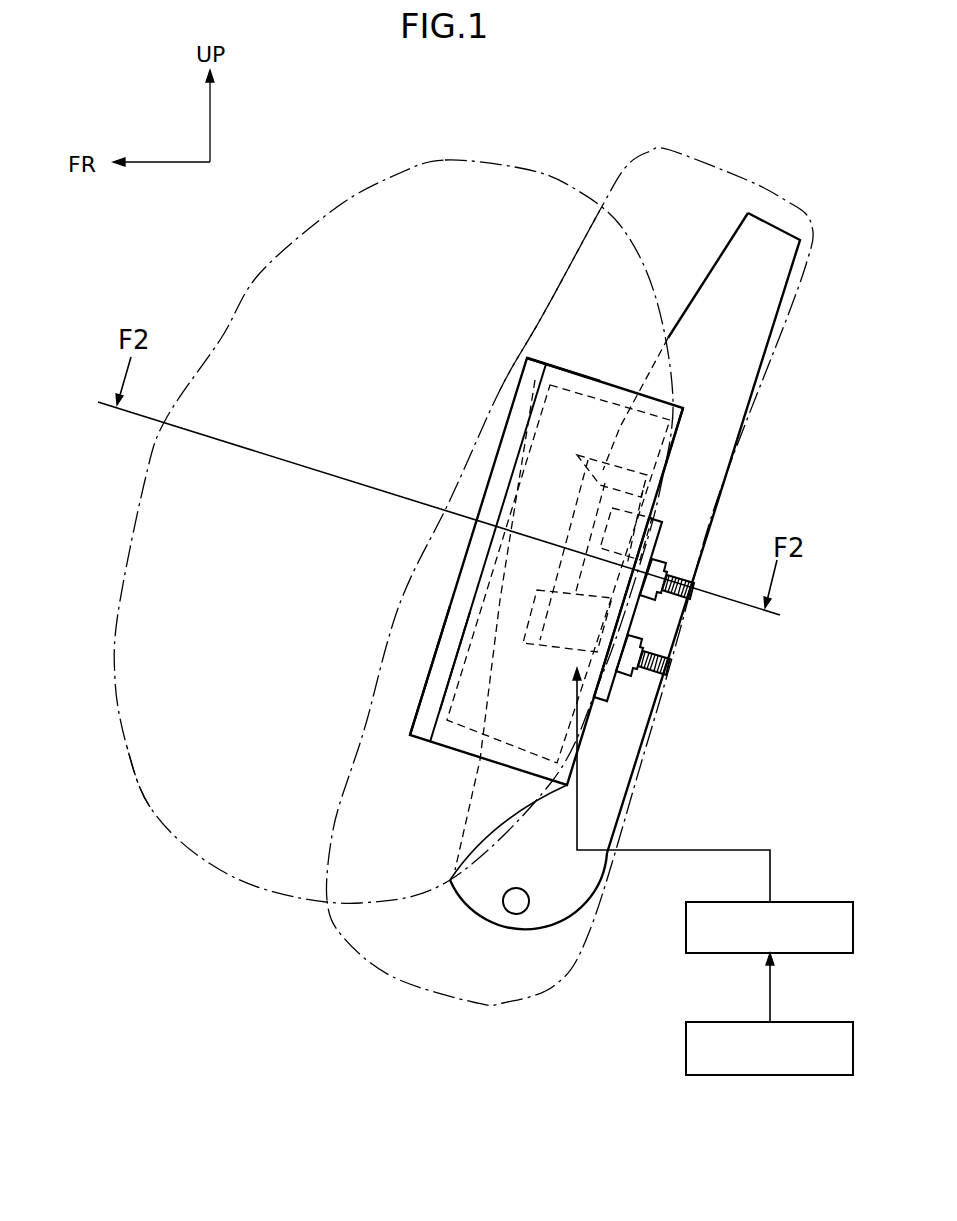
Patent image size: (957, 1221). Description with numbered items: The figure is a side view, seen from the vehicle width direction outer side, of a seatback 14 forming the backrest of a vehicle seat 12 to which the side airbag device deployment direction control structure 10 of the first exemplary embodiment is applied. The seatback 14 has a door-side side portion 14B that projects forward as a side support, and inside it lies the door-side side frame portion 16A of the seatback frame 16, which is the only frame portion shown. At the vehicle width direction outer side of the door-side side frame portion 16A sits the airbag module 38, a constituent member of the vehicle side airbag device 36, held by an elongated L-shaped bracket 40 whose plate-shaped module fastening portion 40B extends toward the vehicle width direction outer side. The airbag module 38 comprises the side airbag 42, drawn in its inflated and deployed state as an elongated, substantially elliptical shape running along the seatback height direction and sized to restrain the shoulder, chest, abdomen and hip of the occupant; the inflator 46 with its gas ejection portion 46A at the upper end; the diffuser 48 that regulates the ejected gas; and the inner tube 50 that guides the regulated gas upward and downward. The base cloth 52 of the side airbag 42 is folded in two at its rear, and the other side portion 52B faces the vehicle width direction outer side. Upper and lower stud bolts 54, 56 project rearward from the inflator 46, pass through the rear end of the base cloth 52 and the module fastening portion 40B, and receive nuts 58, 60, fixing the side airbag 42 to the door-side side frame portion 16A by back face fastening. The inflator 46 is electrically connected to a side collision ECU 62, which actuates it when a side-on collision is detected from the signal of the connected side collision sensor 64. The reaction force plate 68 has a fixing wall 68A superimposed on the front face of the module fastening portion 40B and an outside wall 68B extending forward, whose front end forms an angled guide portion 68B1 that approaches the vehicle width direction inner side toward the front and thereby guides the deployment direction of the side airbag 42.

The side airbag device deployment direction control structure 10 is at (360, 367).
The vehicle seat 12 is at (581, 533).
The seatback 14 is at (748, 183).
The door-side side portion 14B is at (560, 277).
The seatback frame 16 is at (740, 533).
The door-side side frame portion 16A is at (763, 350).
The vehicle side airbag device 36 is at (500, 350).
The airbag module 38 is at (455, 742).
The bracket 40 is at (625, 814).
The module fastening portion 40B is at (618, 700).
The side airbag 42 is at (258, 278).
The inflator 46 is at (590, 597).
The gas ejection portion 46A is at (665, 527).
The diffuser 48 is at (583, 523).
The inner tube 50 is at (567, 488).
The base cloth 52 is at (218, 853).
The another side portion 52B is at (150, 802).
The upper stud bolt 54 is at (693, 590).
The lower stud bolt 56 is at (677, 663).
The nut 58 is at (660, 590).
The nut 60 is at (645, 672).
The side collision ECU 62 is at (837, 900).
The side collision sensor 64 is at (837, 1021).
The reaction force plate 68 is at (507, 418).
The fixing wall 68A is at (668, 468).
The outside wall 68B is at (467, 693).
The guide portion 68B1 is at (443, 655).